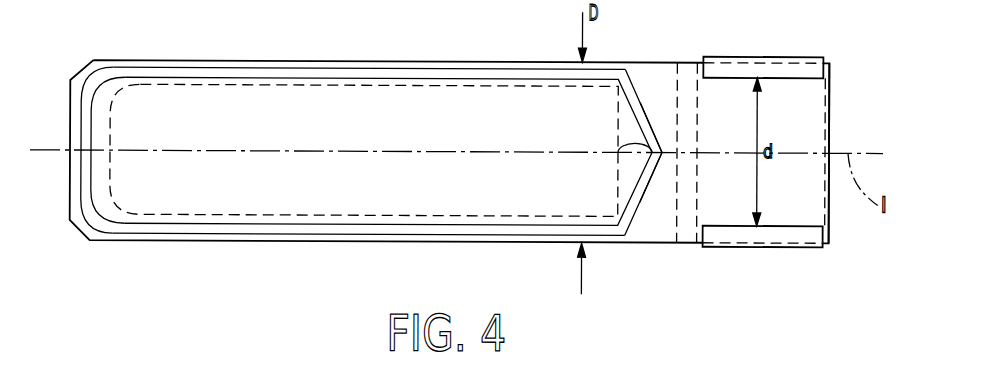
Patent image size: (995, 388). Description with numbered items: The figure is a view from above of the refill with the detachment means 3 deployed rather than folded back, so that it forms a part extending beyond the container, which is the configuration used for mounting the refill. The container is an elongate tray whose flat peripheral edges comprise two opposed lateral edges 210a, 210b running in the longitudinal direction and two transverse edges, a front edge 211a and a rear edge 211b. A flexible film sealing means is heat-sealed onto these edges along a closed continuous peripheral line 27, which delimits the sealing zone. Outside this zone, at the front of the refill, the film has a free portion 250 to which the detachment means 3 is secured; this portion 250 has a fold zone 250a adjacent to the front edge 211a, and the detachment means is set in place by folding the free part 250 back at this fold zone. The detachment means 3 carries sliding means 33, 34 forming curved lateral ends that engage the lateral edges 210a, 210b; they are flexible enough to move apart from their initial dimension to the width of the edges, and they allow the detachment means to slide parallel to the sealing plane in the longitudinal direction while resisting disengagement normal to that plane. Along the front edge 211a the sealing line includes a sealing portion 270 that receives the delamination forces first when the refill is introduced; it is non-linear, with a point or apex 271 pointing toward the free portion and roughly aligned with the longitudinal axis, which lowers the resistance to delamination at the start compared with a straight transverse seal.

The detachment means 3 is at (834, 247).
The closed continuous peripheral line 27 is at (325, 224).
The sliding means 33 is at (777, 245).
The sliding means 34 is at (812, 53).
The lateral edge 210a is at (451, 60).
The lateral edge 210b is at (430, 240).
The front edge 211a is at (656, 226).
The rear edge 211b is at (70, 175).
The portion 250 is at (808, 104).
The fold zone 250a is at (683, 68).
The sealing portion 270 is at (638, 96).
The point or apex 271 is at (624, 146).